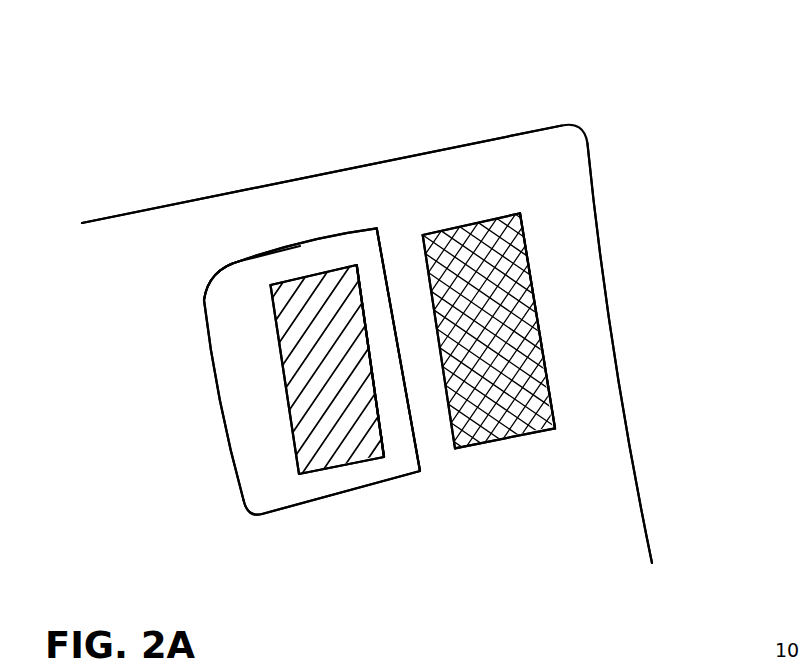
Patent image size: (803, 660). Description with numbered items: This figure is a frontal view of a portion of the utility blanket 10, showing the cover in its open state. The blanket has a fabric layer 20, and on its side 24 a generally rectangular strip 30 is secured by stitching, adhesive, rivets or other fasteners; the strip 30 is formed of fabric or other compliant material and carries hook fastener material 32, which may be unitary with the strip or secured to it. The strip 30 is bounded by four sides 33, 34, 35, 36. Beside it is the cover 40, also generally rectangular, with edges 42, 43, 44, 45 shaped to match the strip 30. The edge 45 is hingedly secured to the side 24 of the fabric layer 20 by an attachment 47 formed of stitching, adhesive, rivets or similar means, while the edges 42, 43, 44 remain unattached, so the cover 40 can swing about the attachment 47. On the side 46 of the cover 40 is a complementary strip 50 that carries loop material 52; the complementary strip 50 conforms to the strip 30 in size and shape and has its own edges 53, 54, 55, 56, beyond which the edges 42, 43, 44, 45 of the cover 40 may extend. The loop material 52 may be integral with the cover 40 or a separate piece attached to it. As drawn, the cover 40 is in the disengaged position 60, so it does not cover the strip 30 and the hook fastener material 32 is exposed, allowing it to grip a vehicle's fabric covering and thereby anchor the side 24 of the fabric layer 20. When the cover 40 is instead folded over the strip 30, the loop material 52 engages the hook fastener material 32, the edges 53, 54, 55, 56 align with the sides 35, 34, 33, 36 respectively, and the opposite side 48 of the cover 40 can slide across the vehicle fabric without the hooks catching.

The utility blanket 10 is at (625, 62).
The fabric layer 20 is at (563, 180).
The side 24 is at (590, 460).
The strip 30 is at (528, 258).
The hook fastener material 32 is at (541, 332).
The side of strip 33 is at (420, 280).
The side of strip 34 is at (497, 218).
The side of strip 35 is at (533, 297).
The side of strip 36 is at (506, 440).
The cover 40 is at (273, 492).
The edge of cover 42 is at (325, 497).
The edge of cover 43 is at (232, 435).
The edge of cover 44 is at (298, 247).
The edge of cover 45 is at (388, 282).
The side of cover 46 is at (218, 307).
The attachment 47 is at (400, 348).
The side of cover 48 is at (237, 497).
The complementary strip 50 is at (366, 461).
The loop material 52 is at (353, 436).
The edge of complementary strip 53 is at (282, 362).
The edge of complementary strip 54 is at (332, 268).
The edge of complementary strip 55 is at (380, 413).
The edge of complementary strip 56 is at (317, 472).
The disengaged position 60 is at (243, 273).